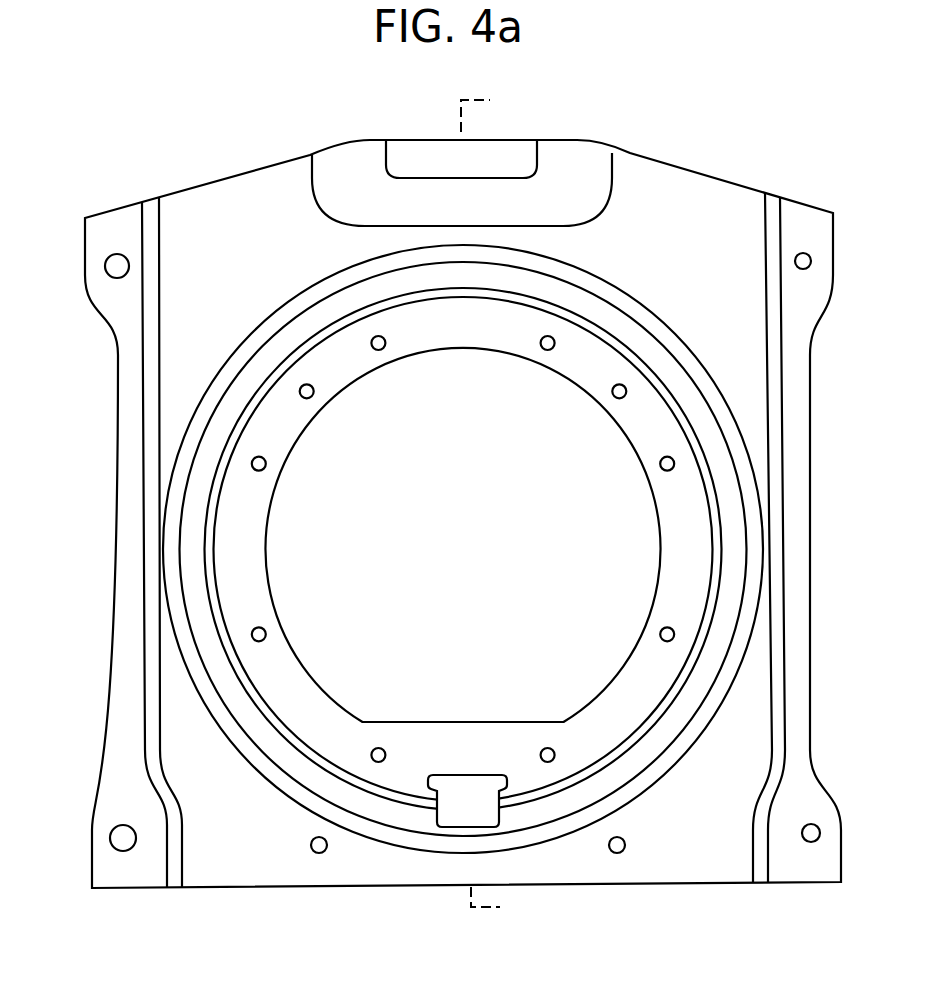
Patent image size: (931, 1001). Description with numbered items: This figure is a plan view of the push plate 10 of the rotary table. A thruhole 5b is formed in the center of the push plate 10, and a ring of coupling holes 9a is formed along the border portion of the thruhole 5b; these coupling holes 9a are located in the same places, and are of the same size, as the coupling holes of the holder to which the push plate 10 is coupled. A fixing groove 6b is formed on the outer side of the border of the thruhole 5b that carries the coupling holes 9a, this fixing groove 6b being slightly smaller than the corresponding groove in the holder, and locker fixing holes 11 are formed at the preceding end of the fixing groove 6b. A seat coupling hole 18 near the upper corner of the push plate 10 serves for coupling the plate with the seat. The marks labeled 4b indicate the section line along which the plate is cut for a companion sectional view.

The push plate 10 is at (785, 188).
The seat coupling hole 18 is at (113, 267).
The thruhole 5b is at (635, 519).
The coupling holes 9a is at (309, 395).
The fixing groove 6b is at (452, 810).
The locker fixing holes 11 is at (319, 853).
The section line 4b is at (507, 506).